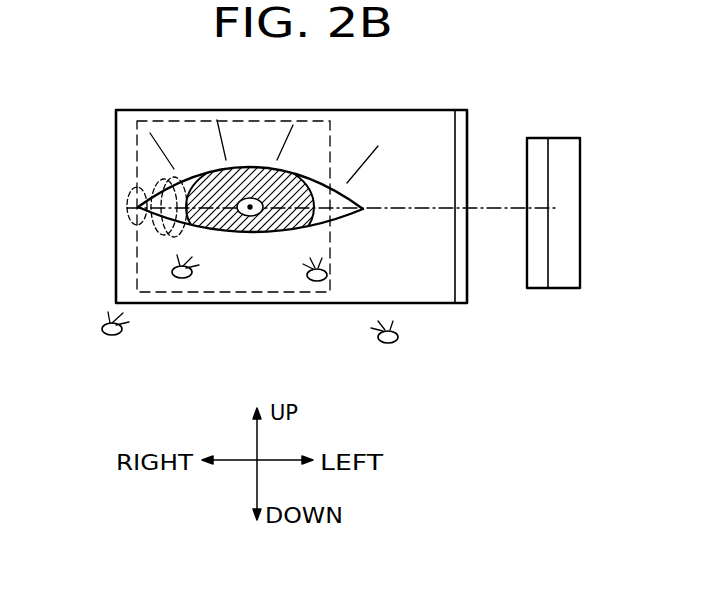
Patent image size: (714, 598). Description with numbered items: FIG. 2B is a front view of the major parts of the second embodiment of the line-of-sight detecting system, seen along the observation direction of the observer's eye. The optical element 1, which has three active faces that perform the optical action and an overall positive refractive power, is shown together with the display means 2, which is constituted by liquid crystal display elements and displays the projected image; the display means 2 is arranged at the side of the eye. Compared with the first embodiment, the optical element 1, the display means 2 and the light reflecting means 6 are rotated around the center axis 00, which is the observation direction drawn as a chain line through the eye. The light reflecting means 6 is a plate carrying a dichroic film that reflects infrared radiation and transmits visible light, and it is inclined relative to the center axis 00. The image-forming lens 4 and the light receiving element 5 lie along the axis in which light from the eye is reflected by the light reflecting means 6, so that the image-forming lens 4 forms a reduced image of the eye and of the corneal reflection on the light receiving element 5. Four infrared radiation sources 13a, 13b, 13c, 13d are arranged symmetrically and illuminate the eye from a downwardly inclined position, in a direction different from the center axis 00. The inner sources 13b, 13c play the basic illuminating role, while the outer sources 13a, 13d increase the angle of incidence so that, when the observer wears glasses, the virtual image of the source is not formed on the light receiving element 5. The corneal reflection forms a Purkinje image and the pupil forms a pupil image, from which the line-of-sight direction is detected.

The optical element 1 is at (446, 132).
The display means 2 is at (580, 155).
The image-forming lens 4 is at (160, 236).
The light receiving element 5 is at (130, 190).
The light reflecting means 6 is at (137, 139).
The center axis 00 is at (252, 216).
The infrared radiation source 13a is at (117, 336).
The infrared radiation source 13b is at (186, 279).
The infrared radiation source 13c is at (312, 283).
The infrared radiation source 13d is at (395, 343).